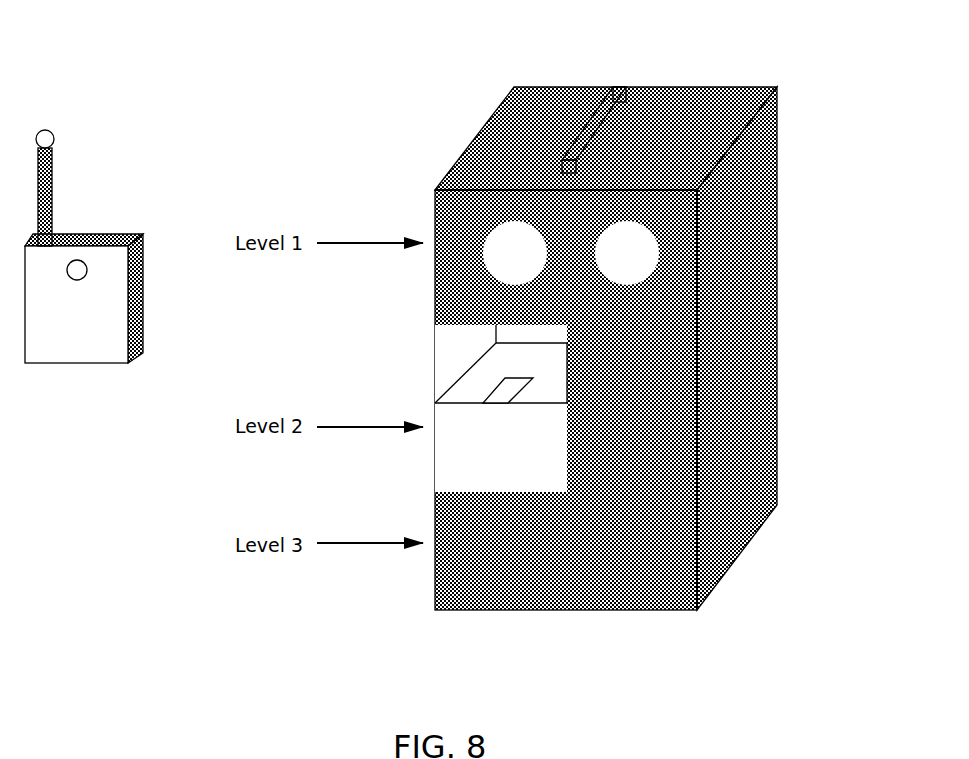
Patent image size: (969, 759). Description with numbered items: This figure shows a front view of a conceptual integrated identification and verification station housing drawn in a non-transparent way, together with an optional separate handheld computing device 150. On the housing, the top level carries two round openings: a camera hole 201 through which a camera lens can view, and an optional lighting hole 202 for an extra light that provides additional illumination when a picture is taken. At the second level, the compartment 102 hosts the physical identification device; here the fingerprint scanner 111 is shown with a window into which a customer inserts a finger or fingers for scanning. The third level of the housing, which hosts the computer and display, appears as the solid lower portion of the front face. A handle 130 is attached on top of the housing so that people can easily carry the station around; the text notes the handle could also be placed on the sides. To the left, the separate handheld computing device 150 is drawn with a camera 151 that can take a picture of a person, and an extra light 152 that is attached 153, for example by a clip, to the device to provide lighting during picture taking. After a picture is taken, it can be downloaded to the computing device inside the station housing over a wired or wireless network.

The compartment 102 is at (456, 458).
The fingerprint scanner 111 is at (506, 390).
The handle 130 is at (612, 87).
The handheld computing device 150 is at (143, 188).
The camera 151 is at (77, 260).
The extra light 152 is at (45, 130).
The attachment 153 is at (53, 185).
The camera hole 201 is at (646, 253).
The lighting hole 202 is at (513, 248).